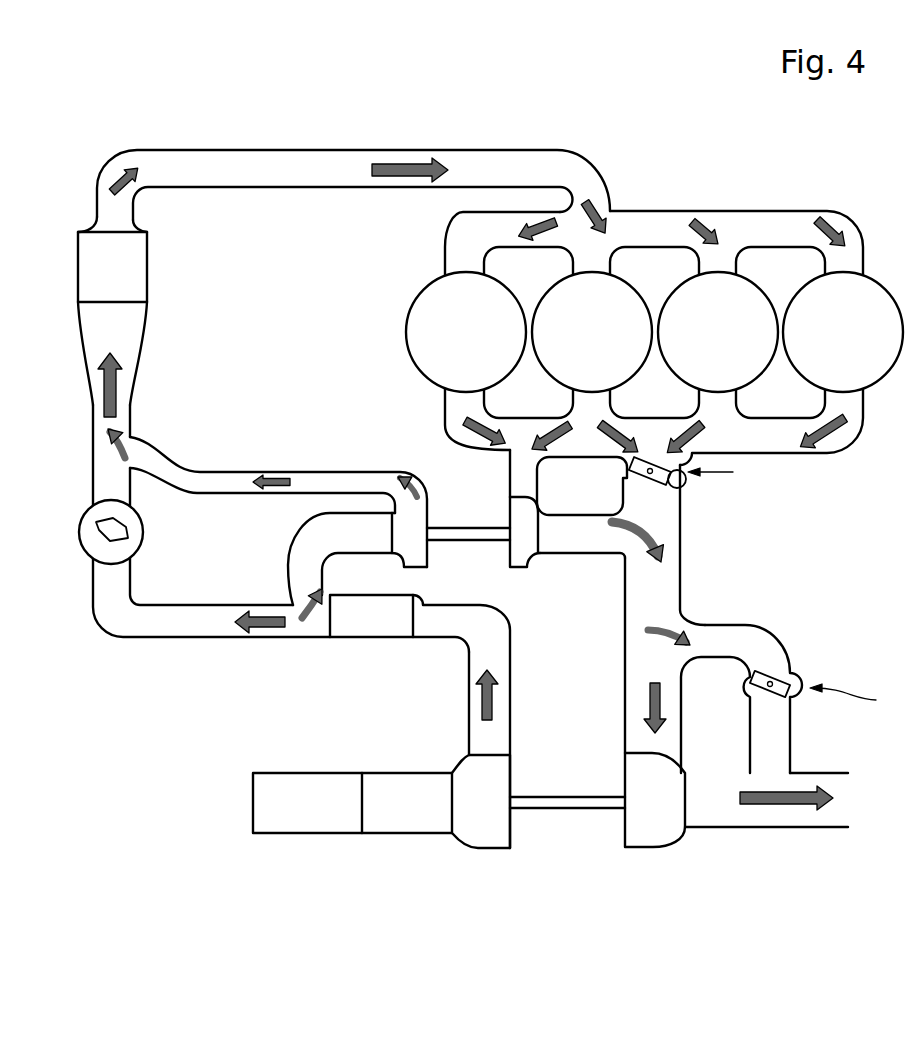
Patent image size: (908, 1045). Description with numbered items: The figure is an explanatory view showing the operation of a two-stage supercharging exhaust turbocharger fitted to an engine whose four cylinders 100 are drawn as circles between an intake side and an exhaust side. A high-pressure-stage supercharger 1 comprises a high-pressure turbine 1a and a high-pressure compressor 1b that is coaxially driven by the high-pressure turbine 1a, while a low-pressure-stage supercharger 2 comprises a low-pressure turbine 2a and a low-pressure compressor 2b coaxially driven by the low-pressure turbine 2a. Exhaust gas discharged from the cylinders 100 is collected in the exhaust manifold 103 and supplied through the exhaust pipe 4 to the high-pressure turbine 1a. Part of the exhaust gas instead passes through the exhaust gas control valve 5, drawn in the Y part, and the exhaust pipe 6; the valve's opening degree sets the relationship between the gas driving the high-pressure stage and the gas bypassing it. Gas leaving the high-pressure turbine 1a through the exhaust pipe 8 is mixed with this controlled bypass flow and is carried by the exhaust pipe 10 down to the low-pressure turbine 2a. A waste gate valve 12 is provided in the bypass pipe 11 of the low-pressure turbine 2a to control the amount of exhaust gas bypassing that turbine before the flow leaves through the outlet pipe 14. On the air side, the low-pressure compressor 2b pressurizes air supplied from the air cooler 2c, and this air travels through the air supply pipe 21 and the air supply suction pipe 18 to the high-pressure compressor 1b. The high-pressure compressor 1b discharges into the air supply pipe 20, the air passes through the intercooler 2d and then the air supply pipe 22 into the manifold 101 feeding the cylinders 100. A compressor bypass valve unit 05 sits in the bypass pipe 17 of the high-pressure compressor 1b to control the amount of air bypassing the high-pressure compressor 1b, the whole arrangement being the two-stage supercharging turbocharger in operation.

The high-pressure-stage supercharger 1 is at (440, 601).
The high-pressure turbine 1a is at (525, 550).
The high-pressure compressor 1b is at (400, 518).
The low-pressure-stage supercharger 2 is at (567, 851).
The low-pressure turbine 2a is at (660, 828).
The low-pressure compressor 2b is at (487, 827).
The air cooler 2c is at (336, 815).
The intercooler 2d is at (80, 282).
The exhaust pipe 4 is at (520, 477).
The exhaust gas control valve 5 is at (680, 490).
The exhaust pipe 6 is at (652, 507).
The exhaust pipe 8 is at (587, 540).
The exhaust pipe 10 is at (633, 725).
The bypass pipe 11 is at (755, 643).
The waste gate valve 12 is at (775, 670).
The exhaust pipe 14 is at (783, 815).
The bypass pipe 17 is at (200, 630).
The air supply suction pipe 18 is at (302, 552).
The air supply pipe 20 is at (197, 477).
The air supply pipe 21 is at (482, 657).
The air supply pipe 22 is at (308, 165).
The cylinder 100 is at (410, 305).
The manifold 101 is at (678, 223).
The exhaust manifold 103 is at (773, 455).
The compressor bypass valve unit 05 is at (100, 537).